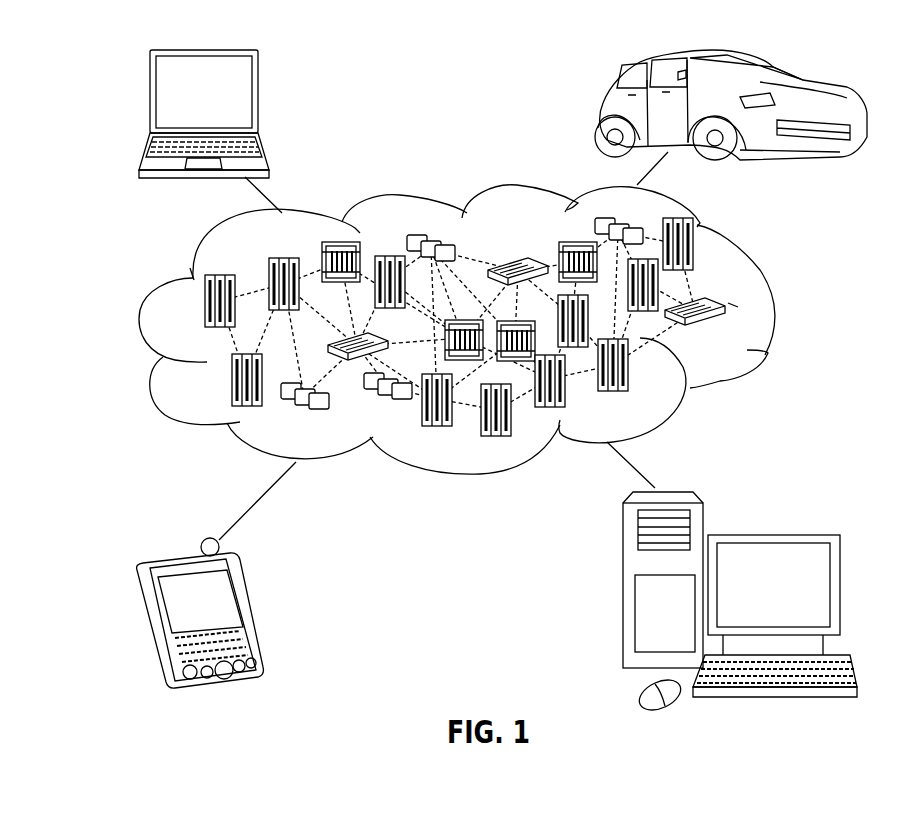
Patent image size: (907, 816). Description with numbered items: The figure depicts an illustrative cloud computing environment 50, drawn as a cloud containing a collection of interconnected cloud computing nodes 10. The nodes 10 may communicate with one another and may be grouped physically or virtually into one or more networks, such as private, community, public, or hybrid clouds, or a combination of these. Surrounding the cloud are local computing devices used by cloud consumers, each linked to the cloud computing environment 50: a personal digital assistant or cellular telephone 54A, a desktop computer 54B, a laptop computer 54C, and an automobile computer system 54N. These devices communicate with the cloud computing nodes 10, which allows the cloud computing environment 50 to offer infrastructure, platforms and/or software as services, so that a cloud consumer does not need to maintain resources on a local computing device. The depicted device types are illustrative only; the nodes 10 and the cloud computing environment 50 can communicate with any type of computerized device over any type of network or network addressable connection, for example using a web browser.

The cloud computing node 10 is at (727, 333).
The cloud computing environment 50 is at (478, 329).
The personal digital assistant or cellular telephone 54A is at (248, 608).
The desktop computer 54B is at (770, 533).
The laptop computer 54C is at (259, 98).
The automobile computer system 54N is at (600, 110).